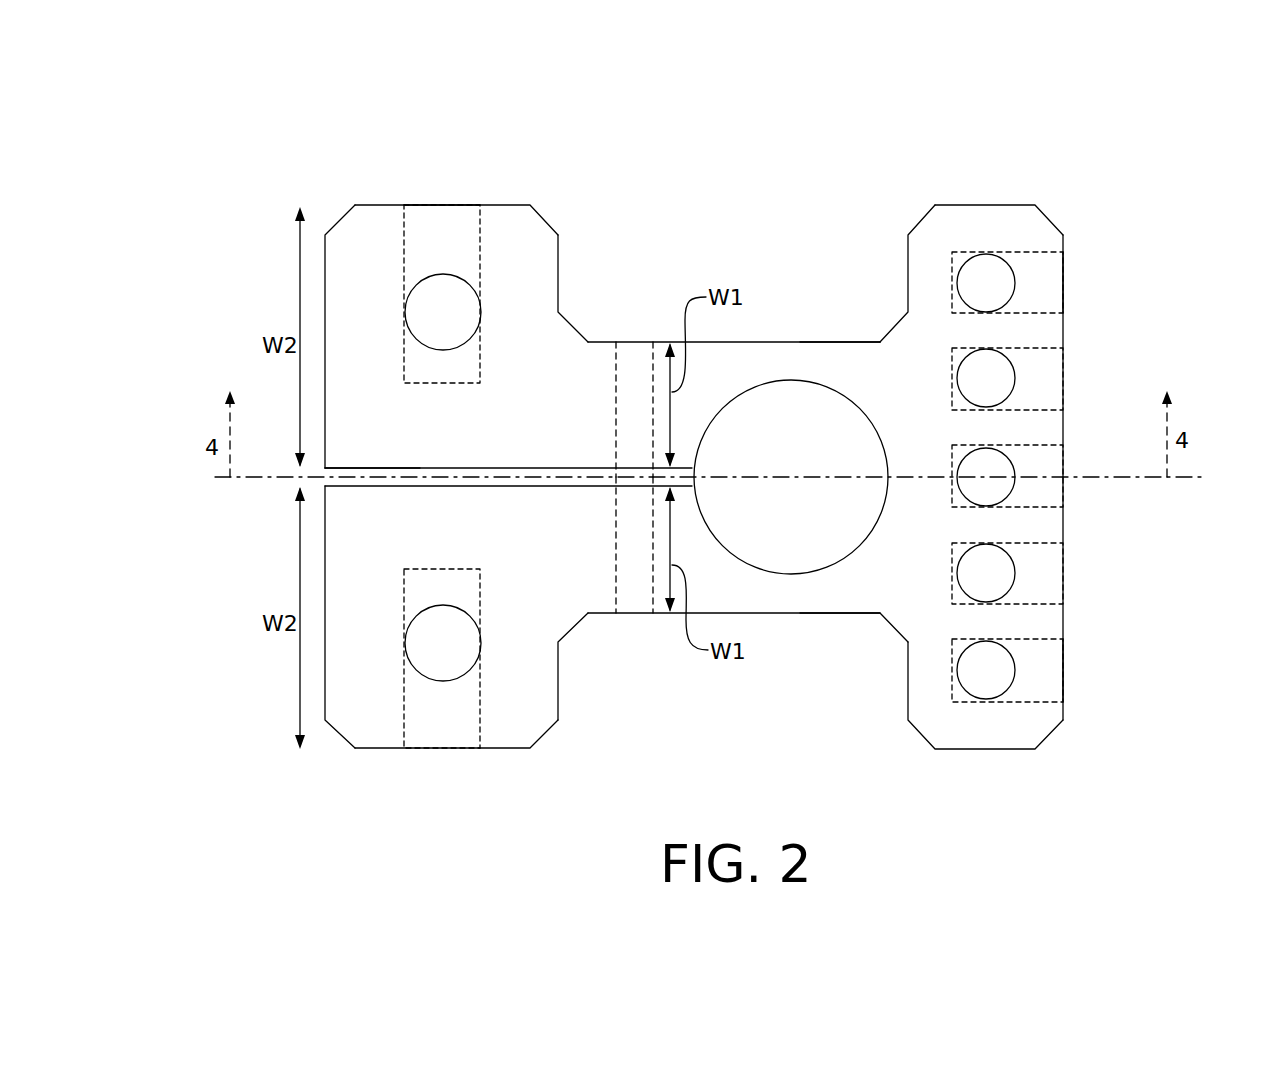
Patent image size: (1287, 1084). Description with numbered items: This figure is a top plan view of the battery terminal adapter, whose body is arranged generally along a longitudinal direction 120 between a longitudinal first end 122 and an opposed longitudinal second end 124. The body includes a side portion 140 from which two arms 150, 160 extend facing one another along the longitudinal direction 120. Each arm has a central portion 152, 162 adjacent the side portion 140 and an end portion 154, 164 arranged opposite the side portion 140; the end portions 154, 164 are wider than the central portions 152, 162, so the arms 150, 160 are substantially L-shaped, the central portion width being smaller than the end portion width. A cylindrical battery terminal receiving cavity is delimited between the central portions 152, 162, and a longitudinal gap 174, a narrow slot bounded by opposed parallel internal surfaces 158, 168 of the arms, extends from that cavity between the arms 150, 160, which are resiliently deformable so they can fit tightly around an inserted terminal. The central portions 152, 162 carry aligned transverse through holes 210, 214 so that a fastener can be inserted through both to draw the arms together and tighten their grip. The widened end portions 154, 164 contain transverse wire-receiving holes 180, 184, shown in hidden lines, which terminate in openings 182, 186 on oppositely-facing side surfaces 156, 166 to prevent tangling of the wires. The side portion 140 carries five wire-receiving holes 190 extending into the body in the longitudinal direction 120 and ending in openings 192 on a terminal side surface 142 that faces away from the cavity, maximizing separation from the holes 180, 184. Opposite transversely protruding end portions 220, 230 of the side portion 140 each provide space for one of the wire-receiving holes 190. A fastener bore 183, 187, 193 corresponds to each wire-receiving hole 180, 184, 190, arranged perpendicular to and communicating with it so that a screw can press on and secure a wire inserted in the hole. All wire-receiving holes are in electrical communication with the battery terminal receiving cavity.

The longitudinal direction 120 is at (1183, 479).
The longitudinal first end 122 is at (1138, 372).
The longitudinal second end 124 is at (258, 543).
The side portion 140 is at (925, 378).
The terminal side surface 142 is at (1063, 527).
The arm 150 is at (797, 625).
The central portion 152 is at (840, 595).
The end portion 154 is at (548, 728).
The side surface 156 is at (500, 750).
The internal surface 158 is at (487, 487).
The arm 160 is at (785, 330).
The central portion 162 is at (823, 360).
The end portion 164 is at (533, 255).
The side surface 166 is at (502, 202).
The internal surface 168 is at (467, 470).
The longitudinal gap 174 is at (410, 473).
The wire-receiving hole 180 is at (427, 225).
The opening 182 is at (438, 203).
The fastener bore 183 is at (422, 308).
The wire-receiving hole 184 is at (423, 718).
The opening 186 is at (443, 750).
The fastener bore 187 is at (433, 650).
The wire-receiving hole 190 is at (1047, 267).
The opening 192 is at (1063, 285).
The fastener bore 193 is at (993, 287).
The transverse through hole 210 is at (633, 598).
The transverse through hole 214 is at (632, 357).
The protruding end portion 220 is at (986, 730).
The protruding end portion 230 is at (988, 215).